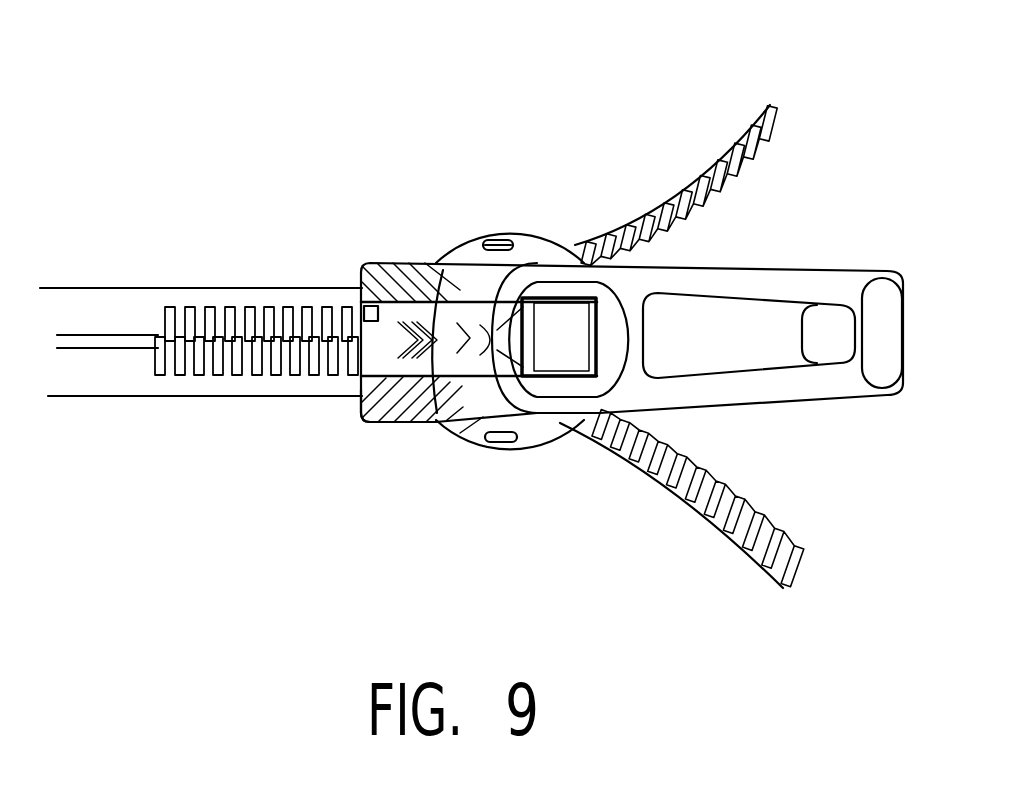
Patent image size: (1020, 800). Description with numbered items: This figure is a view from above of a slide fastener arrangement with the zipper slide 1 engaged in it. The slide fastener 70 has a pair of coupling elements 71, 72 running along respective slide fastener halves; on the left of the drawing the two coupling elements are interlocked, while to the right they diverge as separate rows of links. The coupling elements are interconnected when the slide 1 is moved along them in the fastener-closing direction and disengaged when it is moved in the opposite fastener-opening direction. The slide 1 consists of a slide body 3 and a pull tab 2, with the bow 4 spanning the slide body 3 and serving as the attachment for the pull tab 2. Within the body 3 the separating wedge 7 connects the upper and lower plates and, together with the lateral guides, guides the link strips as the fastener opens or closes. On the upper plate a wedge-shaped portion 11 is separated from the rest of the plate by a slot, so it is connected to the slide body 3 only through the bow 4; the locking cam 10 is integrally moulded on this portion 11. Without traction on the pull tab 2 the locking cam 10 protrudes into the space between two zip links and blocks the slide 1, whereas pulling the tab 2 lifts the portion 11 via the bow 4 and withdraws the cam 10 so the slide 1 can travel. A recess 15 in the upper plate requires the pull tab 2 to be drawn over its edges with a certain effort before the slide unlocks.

The slide fastener 70 is at (637, 100).
The coupling element 71 is at (148, 300).
The coupling element 72 is at (133, 378).
The slide body 3 is at (450, 285).
The locking cam 10 is at (348, 300).
The wedge-shaped portion 11 is at (347, 387).
The zipper slide 1 is at (496, 469).
The bow 4 is at (502, 238).
The recess 15 is at (473, 420).
The pull tab 2 is at (795, 283).
The separating wedge 7 is at (563, 345).